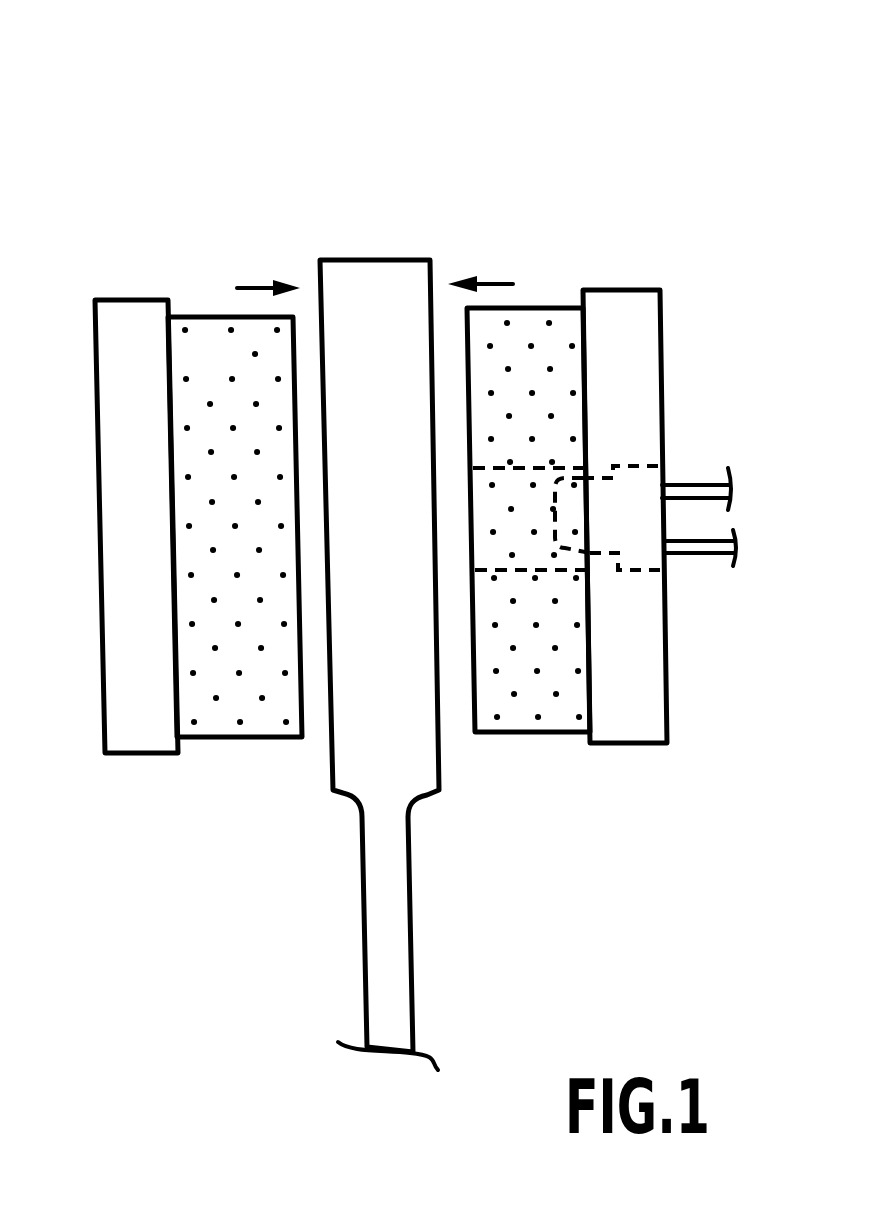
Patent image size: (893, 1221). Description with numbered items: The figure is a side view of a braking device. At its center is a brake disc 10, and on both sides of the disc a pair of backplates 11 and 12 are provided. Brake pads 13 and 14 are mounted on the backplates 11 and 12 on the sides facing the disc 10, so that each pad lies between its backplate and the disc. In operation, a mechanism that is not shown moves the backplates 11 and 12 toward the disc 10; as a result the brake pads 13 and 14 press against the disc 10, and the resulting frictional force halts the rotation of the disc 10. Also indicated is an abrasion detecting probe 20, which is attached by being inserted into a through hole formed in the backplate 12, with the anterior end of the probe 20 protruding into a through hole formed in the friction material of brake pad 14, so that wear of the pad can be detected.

The brake disc 10 is at (383, 203).
The backplate 11 is at (123, 333).
The backplate 12 is at (624, 323).
The brake pad 13 is at (198, 337).
The brake pad 14 is at (517, 333).
The abrasion detecting probe 20 is at (647, 497).